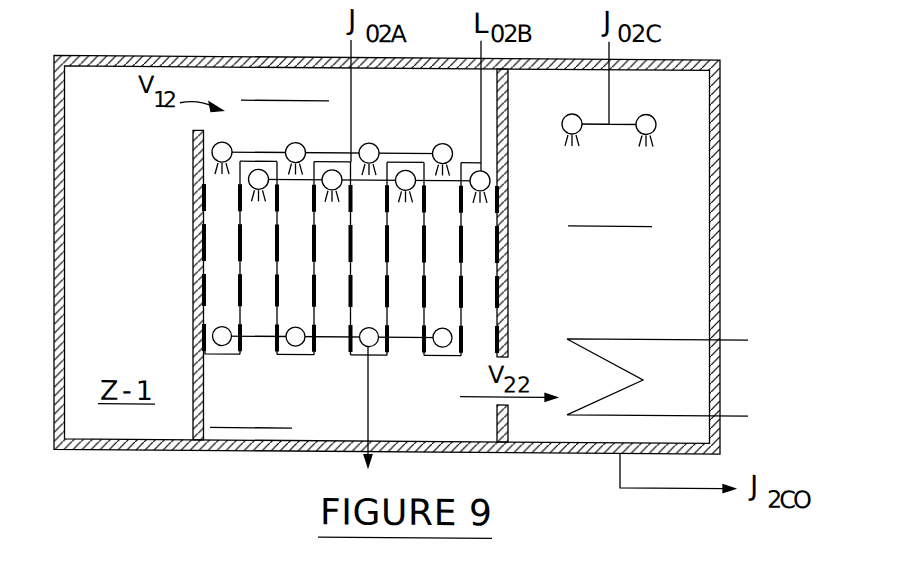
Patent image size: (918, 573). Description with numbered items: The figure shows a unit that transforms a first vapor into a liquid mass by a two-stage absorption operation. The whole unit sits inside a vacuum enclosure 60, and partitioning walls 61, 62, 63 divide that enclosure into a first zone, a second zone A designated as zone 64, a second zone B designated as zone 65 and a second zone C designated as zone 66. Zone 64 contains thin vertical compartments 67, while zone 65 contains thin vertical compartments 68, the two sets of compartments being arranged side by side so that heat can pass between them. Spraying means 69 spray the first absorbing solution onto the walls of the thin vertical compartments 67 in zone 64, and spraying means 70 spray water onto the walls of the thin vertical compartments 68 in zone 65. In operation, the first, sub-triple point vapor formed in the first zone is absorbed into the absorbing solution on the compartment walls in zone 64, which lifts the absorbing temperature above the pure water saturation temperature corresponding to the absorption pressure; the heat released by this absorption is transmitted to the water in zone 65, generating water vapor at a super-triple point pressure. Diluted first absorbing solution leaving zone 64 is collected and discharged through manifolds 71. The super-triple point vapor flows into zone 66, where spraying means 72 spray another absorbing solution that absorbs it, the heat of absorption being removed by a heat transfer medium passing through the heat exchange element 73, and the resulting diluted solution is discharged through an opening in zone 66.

The vacuum enclosure 60 is at (203, 54).
The partitioning wall 61 is at (195, 294).
The partitioning wall 62 is at (508, 230).
The partitioning wall 63 is at (240, 224).
The Zone 2A 64 is at (425, 98).
The Zone 2B 65 is at (352, 426).
The Zone 2C 66 is at (627, 286).
The thin vertical compartments 67 is at (293, 241).
The thin vertical compartments 68 is at (404, 237).
The spraying means 69 is at (297, 148).
The spraying means 70 is at (249, 180).
The manifolds 71 is at (375, 344).
The spraying means 72 is at (565, 111).
The heat exchanger 73 is at (632, 379).